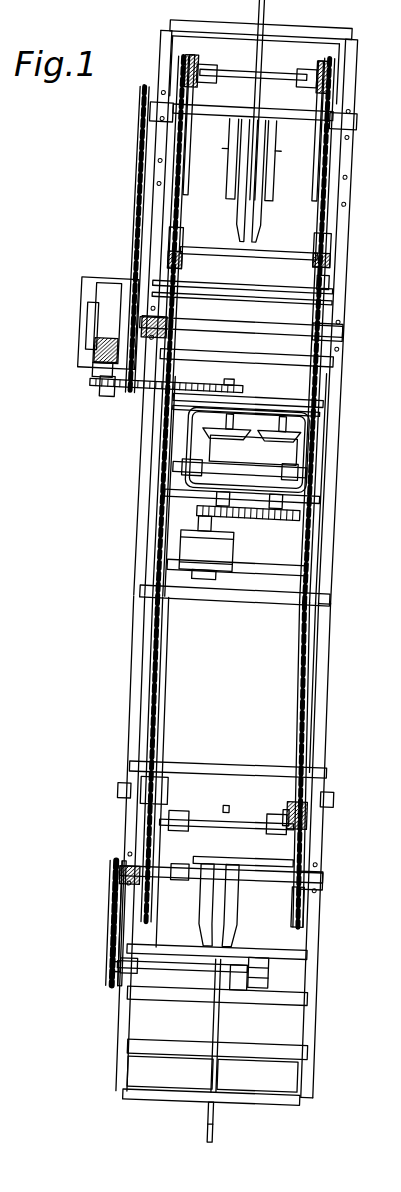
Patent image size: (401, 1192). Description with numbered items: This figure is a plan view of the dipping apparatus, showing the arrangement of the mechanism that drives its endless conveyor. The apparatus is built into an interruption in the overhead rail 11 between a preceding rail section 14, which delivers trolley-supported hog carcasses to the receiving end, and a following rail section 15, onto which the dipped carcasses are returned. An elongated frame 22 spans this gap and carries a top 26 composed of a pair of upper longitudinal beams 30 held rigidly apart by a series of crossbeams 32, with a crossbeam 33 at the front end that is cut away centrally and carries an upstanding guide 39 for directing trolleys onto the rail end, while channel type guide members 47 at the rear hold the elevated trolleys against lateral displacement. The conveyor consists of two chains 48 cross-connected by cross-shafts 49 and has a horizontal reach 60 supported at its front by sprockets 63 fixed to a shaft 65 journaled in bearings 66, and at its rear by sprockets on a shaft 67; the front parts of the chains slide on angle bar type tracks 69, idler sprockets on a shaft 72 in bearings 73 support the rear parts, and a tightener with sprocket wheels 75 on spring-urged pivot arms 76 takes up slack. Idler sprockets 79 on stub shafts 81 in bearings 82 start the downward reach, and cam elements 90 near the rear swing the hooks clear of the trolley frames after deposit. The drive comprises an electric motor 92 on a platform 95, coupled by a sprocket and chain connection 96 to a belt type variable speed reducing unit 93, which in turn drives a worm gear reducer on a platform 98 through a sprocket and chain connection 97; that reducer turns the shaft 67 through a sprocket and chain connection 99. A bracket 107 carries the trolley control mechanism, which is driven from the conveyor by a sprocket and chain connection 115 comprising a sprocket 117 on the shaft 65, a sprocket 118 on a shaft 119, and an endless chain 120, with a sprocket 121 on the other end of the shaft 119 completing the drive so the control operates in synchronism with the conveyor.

The overhead rail 11 is at (208, 1131).
The preceding rail section 14 is at (214, 1118).
The following rail section 15 is at (262, 15).
The elongated frame 22 is at (344, 410).
The top 26 is at (351, 255).
The upper longitudinal beams 30 is at (357, 67).
The crossbeams 32 is at (333, 36).
The crossbeam 33 is at (257, 890).
The guide 39 is at (232, 923).
The channel type guide members 47 is at (240, 157).
The chains 48 is at (335, 360).
The cross-shafts 49 is at (229, 75).
The horizontal reach 60 is at (328, 283).
The sprockets 63 is at (307, 898).
The shaft 65 is at (178, 880).
The bearings 66 is at (326, 882).
The shaft 67 is at (277, 115).
The angle bar type tracks 69 is at (313, 532).
The shaft 72 is at (245, 328).
The bearings 73 is at (347, 332).
The sprocket wheels 75 is at (178, 236).
The pivot arms 76 is at (340, 228).
The idler sprockets 79 is at (288, 788).
The stub shafts 81 is at (285, 805).
The bearings 82 is at (333, 806).
The cam elements 90 is at (194, 92).
The electric motor 92 is at (218, 577).
The belt type variable speed reducing unit 93 is at (247, 450).
The platform 95 is at (223, 543).
The sprocket and chain connection 96 is at (250, 512).
The sprocket and chain connection 97 is at (140, 390).
The platform 98 is at (85, 340).
The sprocket and chain connection 99 is at (138, 226).
The bracket 107 is at (238, 982).
The sprocket and chain connection 115 is at (111, 920).
The sprocket 117 is at (120, 860).
The sprocket 118 is at (113, 977).
The shaft 119 is at (153, 968).
The endless chain 120 is at (112, 938).
The sprocket 121 is at (263, 978).